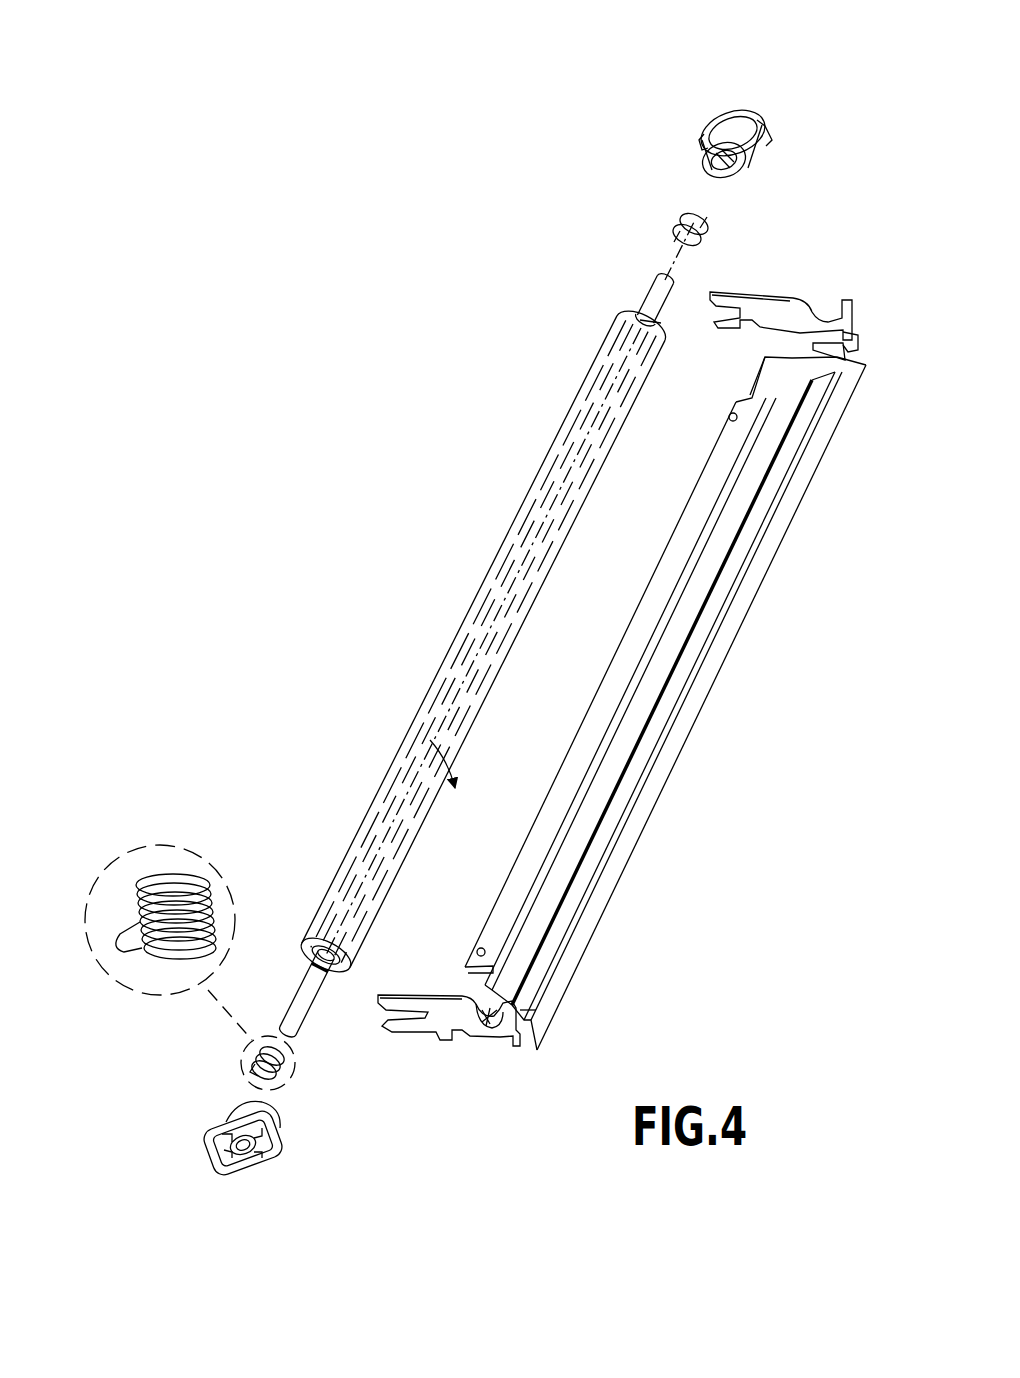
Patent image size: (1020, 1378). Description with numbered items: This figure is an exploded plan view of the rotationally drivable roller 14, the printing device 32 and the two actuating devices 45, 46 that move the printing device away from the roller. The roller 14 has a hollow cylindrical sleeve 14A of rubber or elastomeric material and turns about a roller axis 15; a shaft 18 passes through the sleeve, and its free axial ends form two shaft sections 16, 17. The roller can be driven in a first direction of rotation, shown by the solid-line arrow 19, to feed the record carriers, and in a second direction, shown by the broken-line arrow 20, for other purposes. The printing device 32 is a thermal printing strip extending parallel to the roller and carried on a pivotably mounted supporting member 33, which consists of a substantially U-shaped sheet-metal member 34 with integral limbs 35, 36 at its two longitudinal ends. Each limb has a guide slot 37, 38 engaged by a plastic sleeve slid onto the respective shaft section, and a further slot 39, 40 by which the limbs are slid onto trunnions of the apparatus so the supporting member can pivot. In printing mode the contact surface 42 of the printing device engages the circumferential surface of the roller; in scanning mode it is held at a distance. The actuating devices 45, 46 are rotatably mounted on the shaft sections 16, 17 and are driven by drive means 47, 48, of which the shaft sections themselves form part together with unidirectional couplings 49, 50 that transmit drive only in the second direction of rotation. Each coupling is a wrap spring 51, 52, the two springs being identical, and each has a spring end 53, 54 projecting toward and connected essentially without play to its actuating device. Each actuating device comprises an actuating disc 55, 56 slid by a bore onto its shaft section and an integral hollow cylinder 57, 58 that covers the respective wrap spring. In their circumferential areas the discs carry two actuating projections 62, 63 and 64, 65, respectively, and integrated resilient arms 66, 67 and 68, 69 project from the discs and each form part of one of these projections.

The roller 14 is at (405, 728).
The hollow cylindrical sleeve 14A is at (541, 477).
The roller axis 15 is at (600, 403).
The shaft section 16 is at (311, 958).
The shaft section 17 is at (642, 316).
The shaft 18 is at (531, 525).
The solid-line arrow 19 is at (502, 642).
The broken-line arrow 20 is at (458, 775).
The printing device 32 is at (690, 654).
The supporting member 33 is at (771, 562).
The U-shaped member 34 is at (780, 494).
The limb 35 is at (446, 1030).
The limb 36 is at (781, 300).
The guide slot 37 is at (492, 1030).
The guide slot 38 is at (830, 308).
The further slot 39 is at (401, 1002).
The further slot 40 is at (742, 303).
The contact surface 42 is at (612, 776).
The actuating device 45 is at (242, 1186).
The actuating device 46 is at (758, 92).
The drive means 47 is at (330, 1048).
The drive means 48 is at (661, 196).
The unidirectional coupling 49 is at (312, 1060).
The unidirectional coupling 50 is at (718, 218).
The wrap spring 51 is at (185, 872).
The wrap spring 52 is at (704, 219).
The spring end 53 is at (122, 926).
The spring end 54 is at (678, 235).
The actuating disc 55 is at (265, 1162).
The actuating disc 56 is at (730, 112).
The hollow cylinder 57 is at (246, 1110).
The hollow cylinder 58 is at (750, 152).
The actuating projection 62 is at (292, 1143).
The actuating projection 63 is at (219, 1162).
The actuating projection 64 is at (768, 122).
The actuating projection 65 is at (702, 138).
The resilient arm 66 is at (270, 1136).
The resilient arm 67 is at (212, 1150).
The resilient arm 68 is at (772, 132).
The resilient arm 69 is at (712, 148).